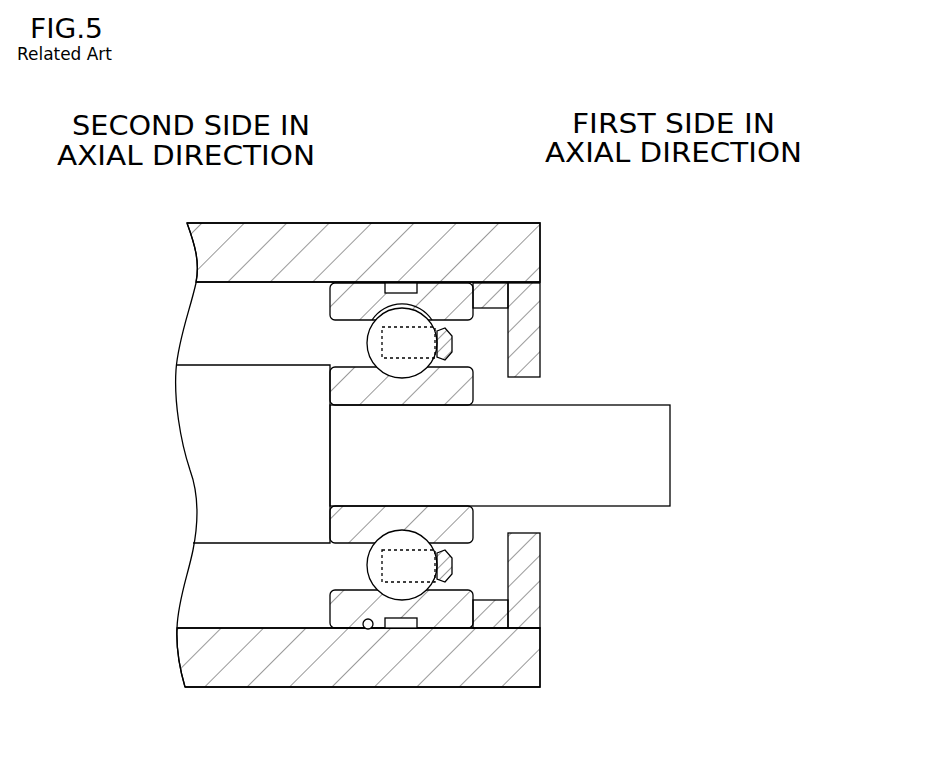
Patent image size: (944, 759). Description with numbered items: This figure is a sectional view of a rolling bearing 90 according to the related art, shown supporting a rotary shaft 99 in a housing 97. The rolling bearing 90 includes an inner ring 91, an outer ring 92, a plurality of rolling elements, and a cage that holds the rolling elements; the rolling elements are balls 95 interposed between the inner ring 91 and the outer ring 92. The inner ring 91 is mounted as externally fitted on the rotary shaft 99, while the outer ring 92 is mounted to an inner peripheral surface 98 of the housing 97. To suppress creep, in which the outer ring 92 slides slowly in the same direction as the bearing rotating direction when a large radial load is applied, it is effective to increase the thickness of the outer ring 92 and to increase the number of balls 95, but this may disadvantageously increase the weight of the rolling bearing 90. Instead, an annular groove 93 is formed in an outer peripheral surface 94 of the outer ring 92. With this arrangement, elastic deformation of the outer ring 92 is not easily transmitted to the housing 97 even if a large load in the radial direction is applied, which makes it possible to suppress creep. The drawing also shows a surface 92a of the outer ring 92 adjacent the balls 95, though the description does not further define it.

The rolling bearing 90 is at (400, 628).
The inner ring 91 is at (473, 518).
The outer ring 92 is at (438, 618).
The outer ring raceway 92a is at (396, 313).
The annular groove 93 is at (399, 288).
The outer peripheral surface 94 is at (450, 282).
The balls 95 is at (367, 343).
The housing 97 is at (316, 672).
The inner peripheral surface 98 is at (366, 630).
The rotary shaft 99 is at (590, 427).